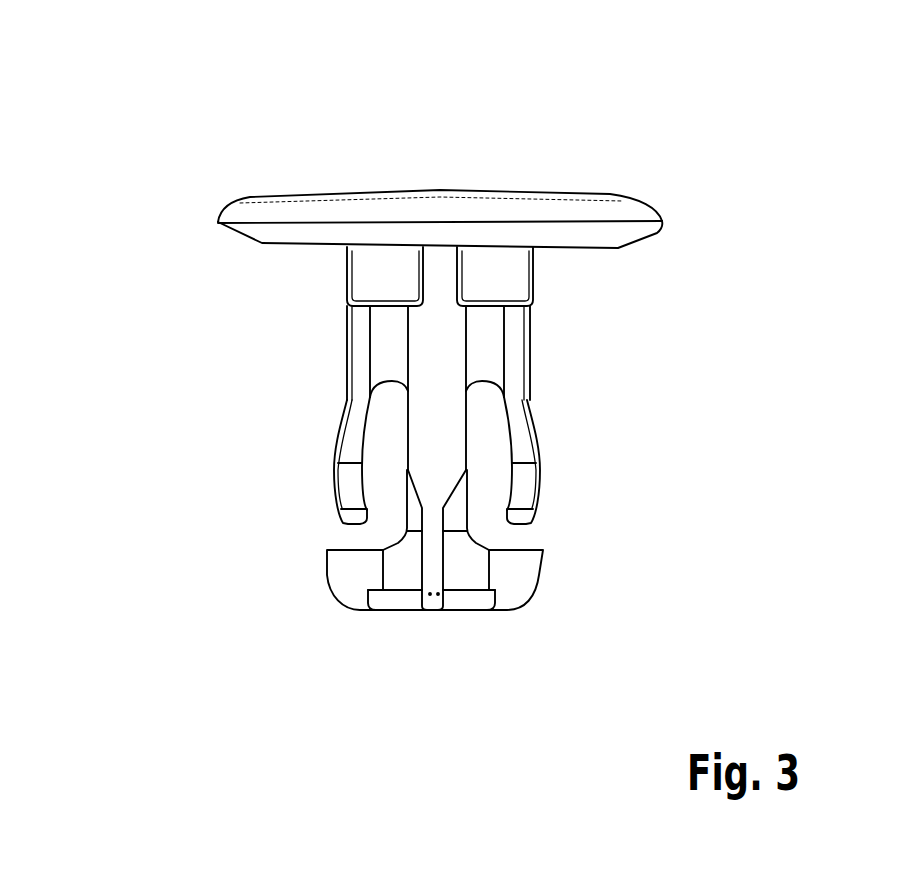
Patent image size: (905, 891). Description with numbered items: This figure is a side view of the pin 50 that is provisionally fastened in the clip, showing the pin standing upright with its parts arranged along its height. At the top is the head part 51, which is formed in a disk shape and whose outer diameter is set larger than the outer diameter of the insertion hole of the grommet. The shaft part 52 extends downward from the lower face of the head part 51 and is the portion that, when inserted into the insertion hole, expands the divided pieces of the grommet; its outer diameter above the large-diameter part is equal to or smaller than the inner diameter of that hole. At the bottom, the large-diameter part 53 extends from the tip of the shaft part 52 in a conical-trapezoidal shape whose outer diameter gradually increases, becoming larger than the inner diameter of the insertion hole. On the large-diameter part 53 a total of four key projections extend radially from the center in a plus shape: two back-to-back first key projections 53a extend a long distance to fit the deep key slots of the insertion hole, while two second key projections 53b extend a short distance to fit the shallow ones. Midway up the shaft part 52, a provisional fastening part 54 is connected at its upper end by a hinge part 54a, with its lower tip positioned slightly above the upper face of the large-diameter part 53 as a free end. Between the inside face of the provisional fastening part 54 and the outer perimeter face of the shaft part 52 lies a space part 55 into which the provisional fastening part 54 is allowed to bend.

The clip 50 is at (172, 147).
The head part 51 is at (650, 222).
The shaft part 52 is at (533, 342).
The large-diameter part 53 is at (406, 572).
The first key projection 53a is at (347, 585).
The second key projection 53b is at (433, 572).
The provisional fastening part 54 is at (347, 488).
The hinge part 54a is at (343, 414).
The space part 55 is at (385, 406).